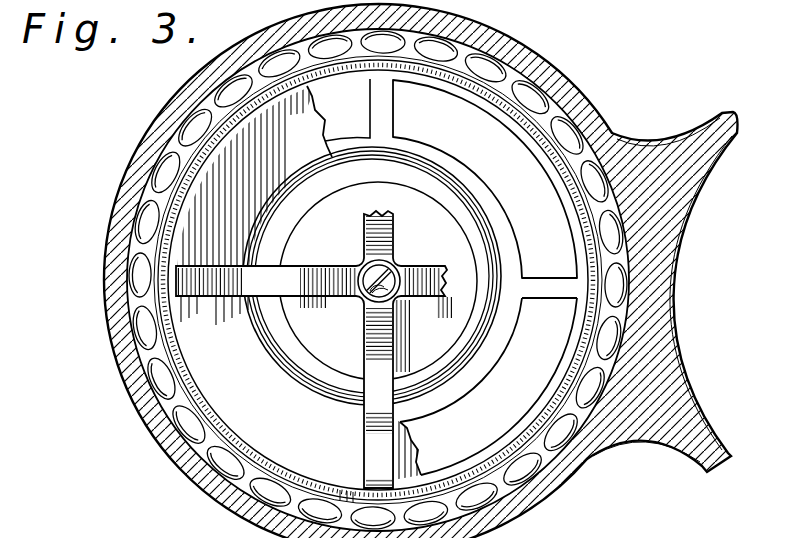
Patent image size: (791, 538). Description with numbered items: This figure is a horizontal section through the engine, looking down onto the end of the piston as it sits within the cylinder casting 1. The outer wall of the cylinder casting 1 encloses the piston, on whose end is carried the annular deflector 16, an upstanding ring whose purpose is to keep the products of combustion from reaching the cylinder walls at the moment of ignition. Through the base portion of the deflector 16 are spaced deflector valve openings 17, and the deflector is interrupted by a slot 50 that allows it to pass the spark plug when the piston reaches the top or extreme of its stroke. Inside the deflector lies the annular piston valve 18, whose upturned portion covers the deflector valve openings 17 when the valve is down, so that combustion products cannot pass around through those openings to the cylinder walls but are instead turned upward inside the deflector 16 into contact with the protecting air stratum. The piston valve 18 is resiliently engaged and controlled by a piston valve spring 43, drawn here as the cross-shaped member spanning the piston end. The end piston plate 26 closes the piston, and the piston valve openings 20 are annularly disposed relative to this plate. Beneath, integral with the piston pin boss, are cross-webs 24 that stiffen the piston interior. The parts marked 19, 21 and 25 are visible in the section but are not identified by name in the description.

The cylinder casting 1 is at (135, 173).
The annular deflector 16 is at (590, 210).
The deflector valve openings 17 is at (560, 107).
The piston valve 18 is at (303, 125).
The segment 19 is at (450, 83).
The piston valve openings 20 is at (501, 286).
The hub ring 21 is at (319, 190).
The cross-webs 24 is at (549, 315).
The segment end 25 is at (372, 92).
The end piston plate 26 is at (402, 264).
The piston valve spring 43 is at (365, 230).
The slot 50 is at (350, 505).